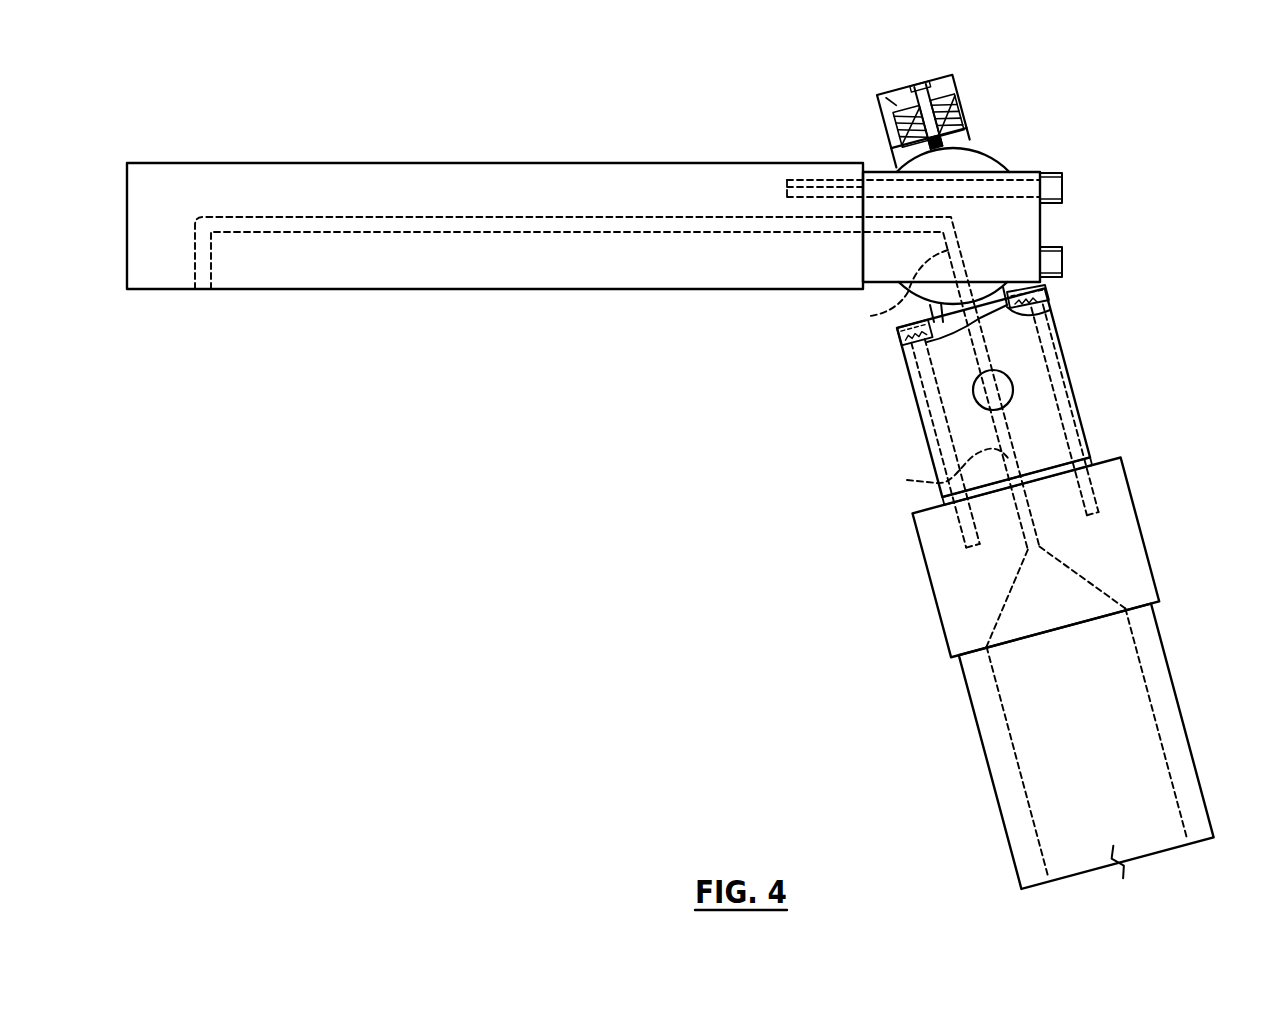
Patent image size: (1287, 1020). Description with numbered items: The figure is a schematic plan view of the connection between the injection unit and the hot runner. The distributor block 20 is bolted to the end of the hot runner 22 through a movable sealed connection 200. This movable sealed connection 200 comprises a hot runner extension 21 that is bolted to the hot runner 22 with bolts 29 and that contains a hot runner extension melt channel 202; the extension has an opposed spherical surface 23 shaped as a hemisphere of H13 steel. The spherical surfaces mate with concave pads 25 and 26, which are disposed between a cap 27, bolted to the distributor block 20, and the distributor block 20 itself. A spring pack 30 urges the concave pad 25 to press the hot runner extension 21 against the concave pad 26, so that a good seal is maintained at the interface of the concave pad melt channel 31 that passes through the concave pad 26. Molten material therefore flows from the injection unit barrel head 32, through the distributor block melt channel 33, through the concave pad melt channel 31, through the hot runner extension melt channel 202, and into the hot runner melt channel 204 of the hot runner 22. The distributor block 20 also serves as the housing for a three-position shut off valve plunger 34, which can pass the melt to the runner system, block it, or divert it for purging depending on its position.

The movable sealed connection 200 is at (1183, 155).
The distributor block 20 is at (1047, 423).
The hot runner extension 21 is at (1013, 225).
The hot runner 22 is at (677, 180).
The spherical surface 23 is at (987, 155).
The concave pad 25 is at (923, 85).
The concave pad 26 is at (1047, 312).
The cap 27 is at (877, 96).
The bolts 29 is at (1053, 185).
The spring pack 30 is at (948, 105).
The concave pad melt channel 31 is at (910, 347).
The injection unit barrel head 32 is at (1120, 535).
The distributor block melt channel 33 is at (943, 473).
The shut off valve plunger 34 is at (973, 397).
The hot runner extension melt channel 202 is at (885, 290).
The hot runner melt channel 204 is at (542, 224).